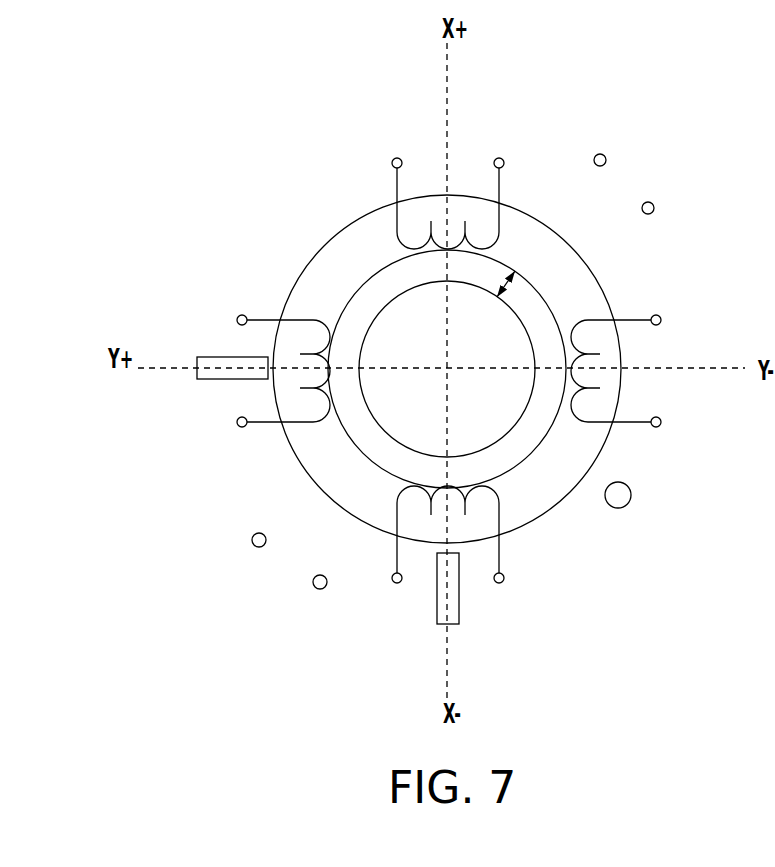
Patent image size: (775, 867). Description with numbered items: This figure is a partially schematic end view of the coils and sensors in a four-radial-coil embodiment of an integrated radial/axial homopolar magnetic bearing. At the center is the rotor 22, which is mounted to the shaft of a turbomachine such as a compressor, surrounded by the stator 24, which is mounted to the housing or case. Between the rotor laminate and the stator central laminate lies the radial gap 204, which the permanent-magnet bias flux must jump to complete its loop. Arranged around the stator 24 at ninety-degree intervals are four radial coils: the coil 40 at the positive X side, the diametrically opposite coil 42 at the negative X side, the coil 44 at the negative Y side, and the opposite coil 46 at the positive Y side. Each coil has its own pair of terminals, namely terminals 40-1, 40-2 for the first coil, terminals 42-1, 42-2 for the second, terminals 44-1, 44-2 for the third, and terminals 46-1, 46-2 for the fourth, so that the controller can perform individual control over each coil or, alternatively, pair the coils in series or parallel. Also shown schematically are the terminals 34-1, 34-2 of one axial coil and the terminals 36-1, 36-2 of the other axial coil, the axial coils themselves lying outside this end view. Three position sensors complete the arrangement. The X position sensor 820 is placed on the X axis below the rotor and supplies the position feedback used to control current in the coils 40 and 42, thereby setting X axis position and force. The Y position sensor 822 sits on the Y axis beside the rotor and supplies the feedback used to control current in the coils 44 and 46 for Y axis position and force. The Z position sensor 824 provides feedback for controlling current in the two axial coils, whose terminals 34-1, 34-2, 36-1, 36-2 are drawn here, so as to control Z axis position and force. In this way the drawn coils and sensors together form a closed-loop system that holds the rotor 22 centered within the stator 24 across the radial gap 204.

The rotor 22 is at (397, 333).
The stator 24 is at (360, 252).
The radial gap 204 is at (517, 286).
The terminal of axial coil 34-1 is at (608, 147).
The terminal of axial coil 34-2 is at (657, 197).
The terminal of axial coil 36-1 is at (257, 553).
The terminal of axial coil 36-2 is at (314, 598).
The radial coil 40 is at (397, 182).
The coil terminal 40-1 is at (394, 156).
The coil terminal 40-2 is at (505, 154).
The radial coil 42 is at (500, 558).
The coil terminal 42-1 is at (394, 590).
The coil terminal 42-2 is at (503, 588).
The radial coil 44 is at (627, 320).
The coil terminal 44-1 is at (661, 310).
The coil terminal 44-2 is at (662, 434).
The radial coil 46 is at (263, 427).
The coil terminal 46-1 is at (237, 308).
The coil terminal 46-2 is at (238, 431).
The X position sensor 820 is at (441, 634).
The Y position sensor 822 is at (190, 388).
The Z position sensor 824 is at (614, 504).